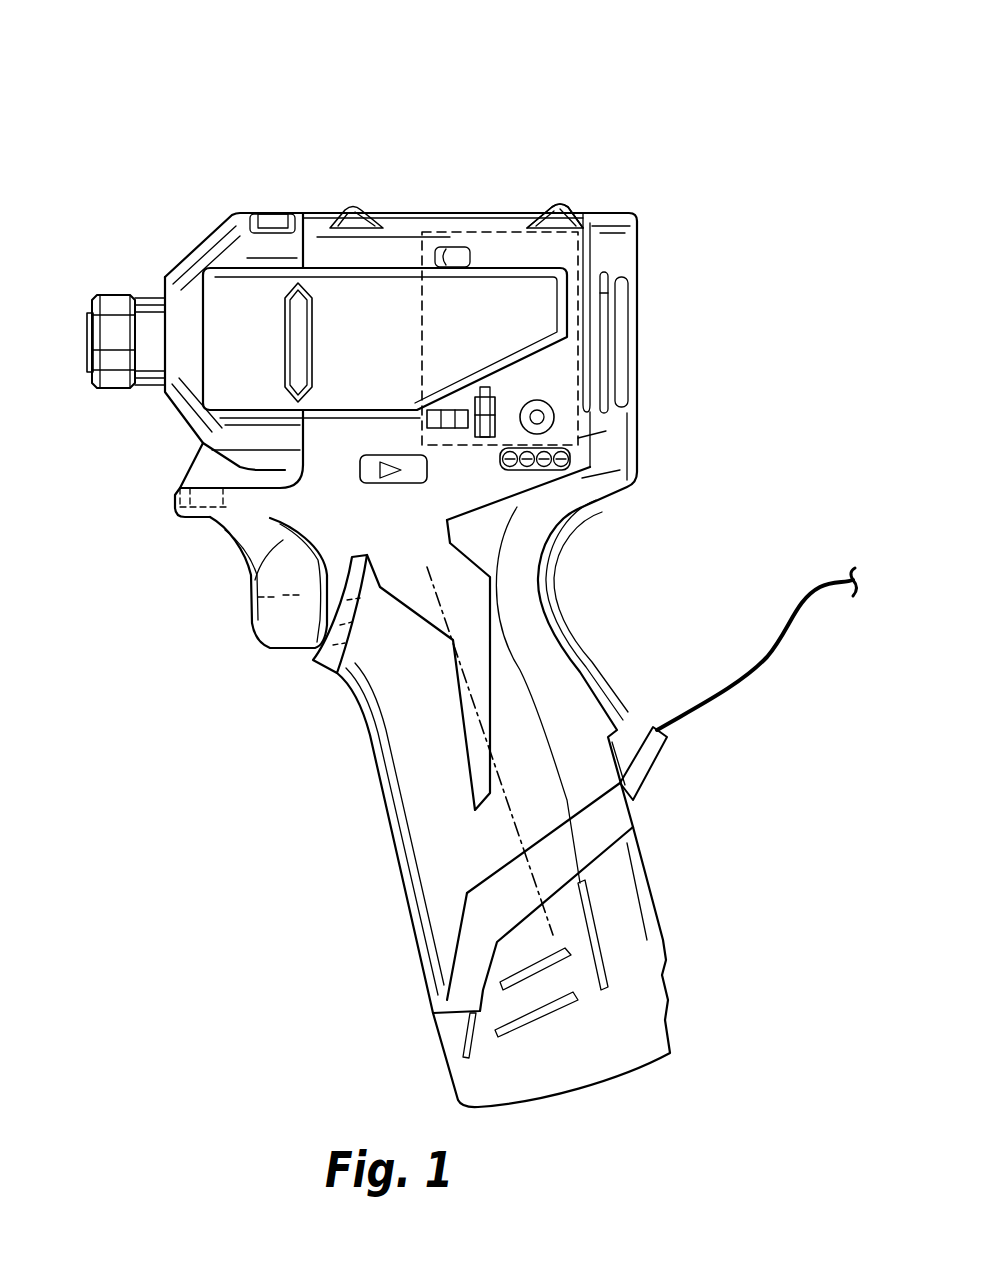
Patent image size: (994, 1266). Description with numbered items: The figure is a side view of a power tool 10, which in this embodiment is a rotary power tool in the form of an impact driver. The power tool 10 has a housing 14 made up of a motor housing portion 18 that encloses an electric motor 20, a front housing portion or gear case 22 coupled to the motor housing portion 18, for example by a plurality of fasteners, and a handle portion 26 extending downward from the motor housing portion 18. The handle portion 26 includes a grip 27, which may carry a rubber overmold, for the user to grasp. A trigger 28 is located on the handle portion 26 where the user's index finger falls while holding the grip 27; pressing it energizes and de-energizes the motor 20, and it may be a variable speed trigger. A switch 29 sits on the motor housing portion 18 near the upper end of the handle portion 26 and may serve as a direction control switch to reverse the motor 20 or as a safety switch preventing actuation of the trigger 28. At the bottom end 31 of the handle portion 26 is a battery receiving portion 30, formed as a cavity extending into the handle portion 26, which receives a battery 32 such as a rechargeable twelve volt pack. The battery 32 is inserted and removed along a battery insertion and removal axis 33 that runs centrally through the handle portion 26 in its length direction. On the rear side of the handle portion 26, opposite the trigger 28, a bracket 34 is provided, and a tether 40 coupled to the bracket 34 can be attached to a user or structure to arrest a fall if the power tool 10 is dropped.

The power tool 10 is at (445, 50).
The housing 14 is at (361, 158).
The motor housing portion 18 is at (538, 227).
The electric motor 20 is at (447, 231).
The gear case 22 is at (233, 243).
The handle portion 26 is at (477, 640).
The grip 27 is at (553, 698).
The trigger 28 is at (297, 587).
The switch 29 is at (400, 473).
The battery receiving portion 30 is at (632, 864).
The bottom end 31 is at (560, 893).
The battery 32 is at (563, 1037).
The battery insertion and removal axis 33 is at (487, 742).
The bracket 34 is at (660, 742).
The tether 40 is at (783, 635).